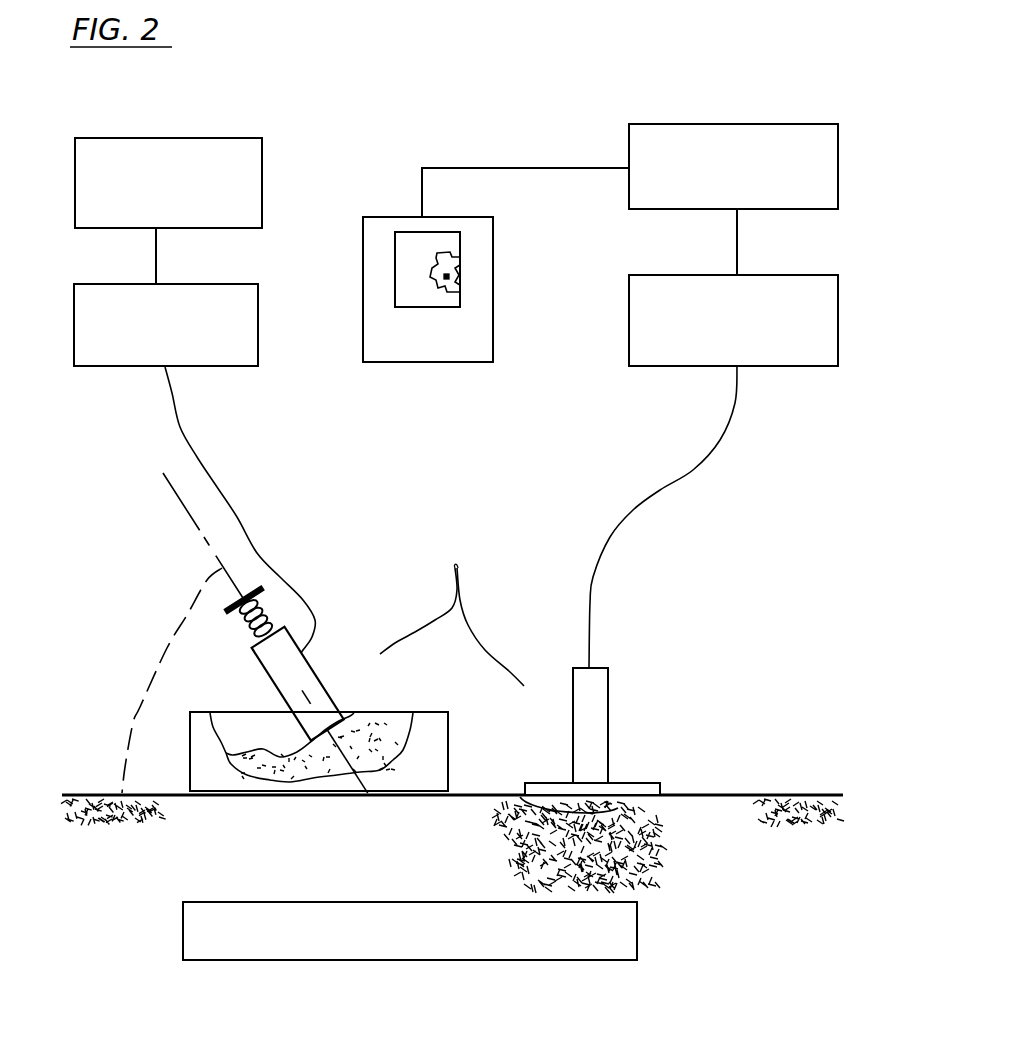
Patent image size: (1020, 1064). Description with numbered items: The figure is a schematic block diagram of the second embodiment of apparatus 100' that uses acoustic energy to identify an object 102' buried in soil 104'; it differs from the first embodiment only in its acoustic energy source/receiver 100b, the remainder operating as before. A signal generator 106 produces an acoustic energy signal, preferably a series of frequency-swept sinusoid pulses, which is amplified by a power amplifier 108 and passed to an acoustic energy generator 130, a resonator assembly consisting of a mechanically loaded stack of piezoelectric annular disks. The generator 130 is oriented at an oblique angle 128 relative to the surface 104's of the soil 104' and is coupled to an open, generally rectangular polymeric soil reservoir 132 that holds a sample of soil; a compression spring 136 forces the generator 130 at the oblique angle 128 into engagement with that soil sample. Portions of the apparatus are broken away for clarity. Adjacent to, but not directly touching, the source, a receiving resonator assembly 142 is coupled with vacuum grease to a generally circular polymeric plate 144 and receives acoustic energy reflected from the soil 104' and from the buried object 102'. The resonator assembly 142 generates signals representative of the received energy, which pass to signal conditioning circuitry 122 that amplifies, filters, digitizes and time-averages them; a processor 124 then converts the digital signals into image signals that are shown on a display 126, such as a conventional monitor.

The apparatus 100' is at (415, 79).
The acoustic energy source/receiver 100b is at (475, 559).
The object 102' is at (446, 931).
The soil 104' is at (453, 786).
The surface of the soil 104's is at (106, 777).
The signal generator 106 is at (75, 178).
The power amplifier 108 is at (74, 332).
The signal conditioning circuitry 122 is at (838, 322).
The processor 124 is at (838, 171).
The display 126 is at (493, 337).
The oblique angle 128 is at (162, 662).
The acoustic energy generator 130 is at (313, 672).
The soil reservoir 132 is at (437, 768).
The compression spring 136 is at (247, 625).
The resonator assembly 142 is at (608, 728).
The circular plate 144 is at (645, 783).